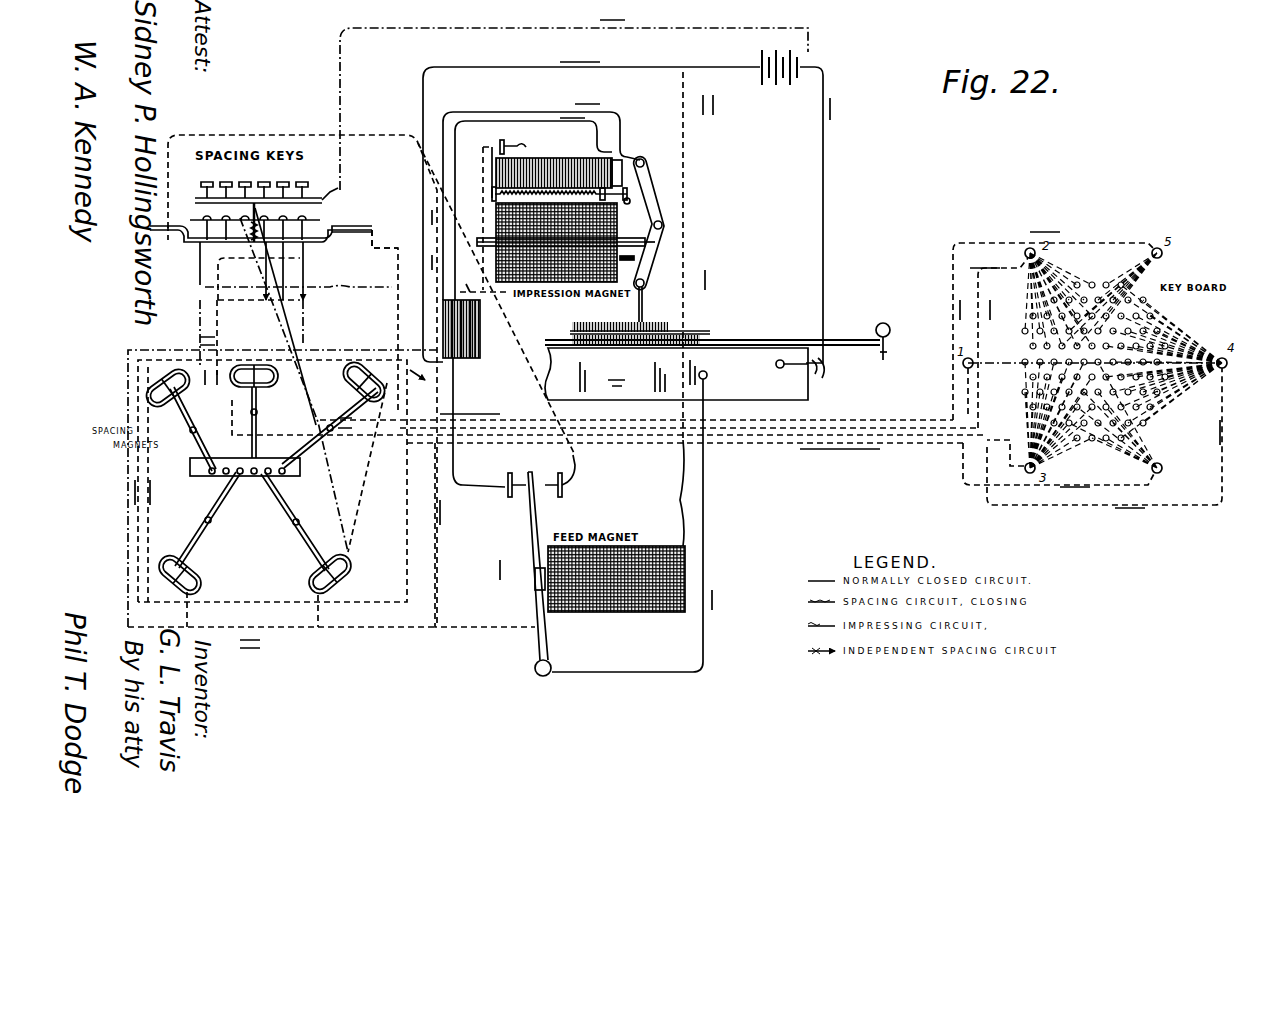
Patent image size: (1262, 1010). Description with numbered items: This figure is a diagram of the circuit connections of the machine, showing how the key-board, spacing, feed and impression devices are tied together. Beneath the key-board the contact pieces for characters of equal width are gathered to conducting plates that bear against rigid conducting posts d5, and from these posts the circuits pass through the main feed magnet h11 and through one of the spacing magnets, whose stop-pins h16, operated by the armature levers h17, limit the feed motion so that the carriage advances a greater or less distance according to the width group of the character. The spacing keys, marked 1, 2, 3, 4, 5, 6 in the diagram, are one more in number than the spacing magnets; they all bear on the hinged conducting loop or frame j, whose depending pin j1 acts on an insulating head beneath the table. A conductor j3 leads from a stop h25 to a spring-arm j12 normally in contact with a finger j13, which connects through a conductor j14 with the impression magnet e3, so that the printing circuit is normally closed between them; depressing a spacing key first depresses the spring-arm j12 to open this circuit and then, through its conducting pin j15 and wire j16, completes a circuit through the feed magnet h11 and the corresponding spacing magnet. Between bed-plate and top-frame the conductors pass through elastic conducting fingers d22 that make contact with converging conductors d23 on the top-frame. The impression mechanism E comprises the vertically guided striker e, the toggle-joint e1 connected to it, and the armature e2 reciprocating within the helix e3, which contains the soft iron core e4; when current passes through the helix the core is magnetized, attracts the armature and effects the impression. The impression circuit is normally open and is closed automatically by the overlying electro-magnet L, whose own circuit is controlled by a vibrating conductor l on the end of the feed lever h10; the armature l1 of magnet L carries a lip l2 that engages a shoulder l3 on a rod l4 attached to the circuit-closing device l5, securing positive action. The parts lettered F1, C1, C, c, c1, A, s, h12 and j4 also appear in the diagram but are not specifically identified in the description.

The hinged conducting loop or frame j is at (263, 190).
The depending pin j1 is at (245, 222).
The conductor j3 is at (359, 333).
The spacing key contact wire j4 is at (227, 271).
The spring-arm j12 is at (192, 243).
The finger j13 is at (340, 244).
The conductor j14 is at (385, 239).
The conducting pins j15 is at (255, 223).
The conducting wires j16 is at (299, 271).
The spacing magnet 1 is at (335, 413).
The spacing magnet 2 is at (308, 535).
The spacing magnet 3 is at (254, 403).
The spacing magnet 4 is at (197, 535).
The spacing magnet 5 is at (179, 415).
The keyboard terminal 6 is at (1161, 474).
The stop-pins h16 is at (210, 486).
The frame F1 is at (262, 524).
The armature levers h17 is at (300, 540).
The converging conductors d23 is at (445, 310).
The conducting fingers d22 is at (480, 345).
The electro-magnet L is at (559, 166).
The circuit-closing device l5 is at (508, 162).
The rod l4 is at (630, 194).
The impression magnet or helix e3 is at (556, 242).
The soft iron core e4 is at (494, 238).
The toggle-joint e1 is at (653, 223).
The armature of magnet L l1 is at (624, 172).
The shoulder l3 is at (645, 172).
The lip l2 is at (624, 207).
The armature e2 is at (648, 238).
The impression mechanism E is at (627, 262).
The striker e is at (645, 304).
The type bar C1 is at (640, 327).
The carriage bar C is at (712, 332).
The contact pin c is at (887, 338).
The contact c1 is at (888, 352).
The paper carriage A is at (684, 374).
The terminal s is at (707, 372).
The main feed magnet h11 is at (616, 579).
The vibrating conductor l is at (528, 500).
The stop h25 is at (563, 476).
The armature h12 is at (515, 579).
The feed lever h10 is at (540, 613).
The conducting posts d5 is at (963, 365).